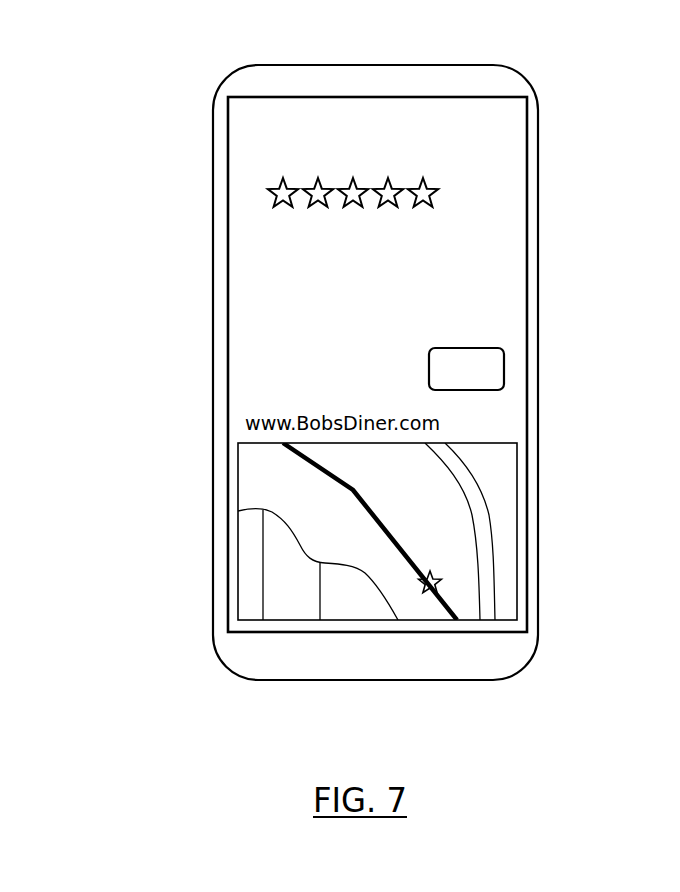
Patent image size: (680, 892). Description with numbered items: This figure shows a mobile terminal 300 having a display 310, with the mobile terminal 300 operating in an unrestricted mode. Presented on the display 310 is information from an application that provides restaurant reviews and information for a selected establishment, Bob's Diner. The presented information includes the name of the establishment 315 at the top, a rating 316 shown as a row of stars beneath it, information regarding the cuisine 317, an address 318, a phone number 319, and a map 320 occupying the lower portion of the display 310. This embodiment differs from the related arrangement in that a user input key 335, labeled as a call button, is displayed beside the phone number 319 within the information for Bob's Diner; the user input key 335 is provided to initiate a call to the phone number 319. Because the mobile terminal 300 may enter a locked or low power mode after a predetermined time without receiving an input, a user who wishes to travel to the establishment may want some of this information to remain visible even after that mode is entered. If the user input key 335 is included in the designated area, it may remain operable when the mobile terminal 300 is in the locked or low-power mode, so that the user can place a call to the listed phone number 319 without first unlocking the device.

The mobile terminal 300 is at (503, 65).
The display 310 is at (527, 130).
The name of the establishment 315 is at (243, 153).
The rating 316 is at (243, 192).
The information regarding the cuisine 317 is at (243, 237).
The address 318 is at (232, 302).
The phone number 319 is at (232, 370).
The map 320 is at (242, 483).
The user input key 335 is at (505, 358).